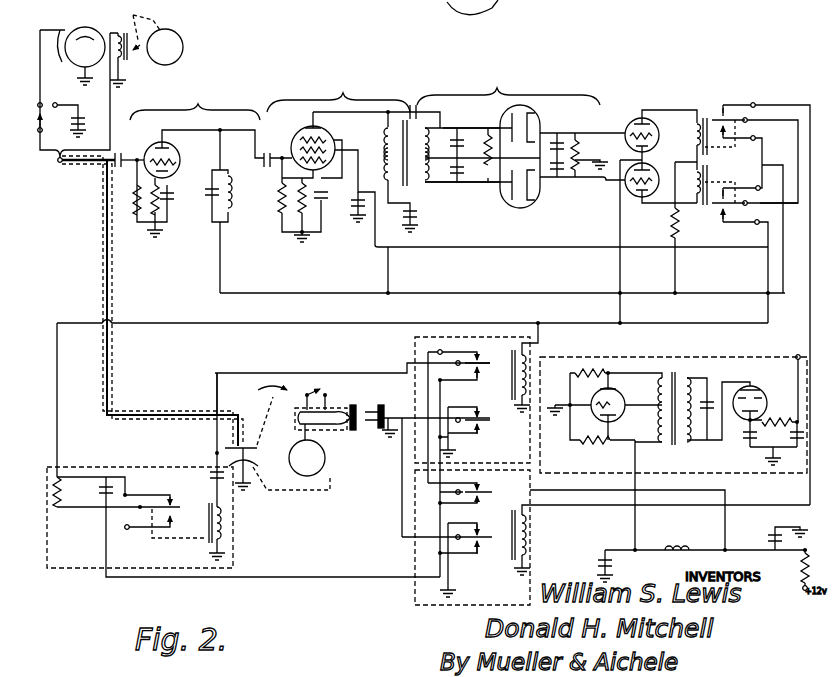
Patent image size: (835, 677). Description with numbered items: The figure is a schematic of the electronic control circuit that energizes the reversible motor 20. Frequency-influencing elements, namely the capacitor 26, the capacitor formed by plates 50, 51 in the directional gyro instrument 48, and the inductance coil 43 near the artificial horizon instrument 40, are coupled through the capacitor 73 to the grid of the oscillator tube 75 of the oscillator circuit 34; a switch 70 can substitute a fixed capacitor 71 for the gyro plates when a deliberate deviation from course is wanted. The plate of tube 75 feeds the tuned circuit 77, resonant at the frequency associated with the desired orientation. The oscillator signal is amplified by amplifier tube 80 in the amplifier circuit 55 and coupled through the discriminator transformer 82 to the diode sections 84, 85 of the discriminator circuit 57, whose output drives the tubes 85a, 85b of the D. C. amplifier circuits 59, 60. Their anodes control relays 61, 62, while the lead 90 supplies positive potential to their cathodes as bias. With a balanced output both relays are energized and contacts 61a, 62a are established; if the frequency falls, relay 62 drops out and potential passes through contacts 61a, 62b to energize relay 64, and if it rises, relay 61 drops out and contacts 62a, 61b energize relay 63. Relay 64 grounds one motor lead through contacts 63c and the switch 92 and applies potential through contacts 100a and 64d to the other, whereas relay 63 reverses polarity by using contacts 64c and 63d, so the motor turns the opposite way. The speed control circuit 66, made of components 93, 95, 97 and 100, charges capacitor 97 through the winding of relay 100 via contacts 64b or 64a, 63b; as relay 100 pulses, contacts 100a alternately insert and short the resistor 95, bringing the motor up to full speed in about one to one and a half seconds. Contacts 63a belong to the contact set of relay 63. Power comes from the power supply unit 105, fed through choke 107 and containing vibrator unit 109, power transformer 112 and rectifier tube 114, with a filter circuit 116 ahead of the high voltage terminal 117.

The reversible motor 20 is at (326, 458).
The capacitor 26 is at (225, 450).
The oscillator circuit 34 is at (195, 99).
The level or artificial horizon indicating instrument 40 is at (185, 43).
The inductance coil 43 is at (128, 63).
The directional gyro instrument 48 is at (96, 31).
The capacitor plate 50 is at (74, 38).
The capacitor plate 51 is at (58, 46).
The amplifier circuit 55 is at (338, 91).
The discriminator circuit 57 is at (508, 84).
The D. C. amplifier circuit 59 is at (626, 122).
The D. C. amplifier circuit 60 is at (622, 198).
The relay 61 is at (726, 100).
The relay contacts 61a is at (738, 137).
The relay contacts 61b is at (724, 108).
The relay 62 is at (697, 212).
The relay contacts 62a is at (723, 192).
The relay contacts 62b is at (723, 216).
The relay 63 is at (532, 535).
The relay contacts 63a is at (474, 485).
The relay contacts 63b is at (478, 500).
The relay contacts 63c is at (480, 542).
The relay contacts 63d is at (469, 560).
The relay 64 is at (410, 350).
The relay contacts 64a is at (470, 351).
The relay contacts 64b is at (478, 372).
The relay contacts 64c is at (481, 409).
The relay contacts 64d is at (478, 426).
The speed control circuit 66 is at (86, 570).
The switch 70 is at (38, 118).
The fixed capacitor 71 is at (82, 119).
The capacitor 73 is at (144, 184).
The oscillator tube 75 is at (176, 160).
The tuned circuit 77 is at (217, 222).
The amplifier tube 80 is at (328, 136).
The discriminator transformer 82 is at (408, 186).
The diode section 84 is at (541, 117).
The diode section 85 is at (540, 195).
The tube 85a is at (636, 122).
The tube 85b is at (642, 199).
The lead 90 is at (597, 294).
The switch 92 is at (327, 394).
The component of speed control circuit 93 is at (104, 500).
The resistor 95 is at (64, 490).
The capacitor 97 is at (213, 473).
The relay 100 is at (222, 525).
The relay contacts 100a is at (188, 485).
The power supply unit 105 is at (752, 475).
The choke 107 is at (683, 546).
The vibrator unit 109 is at (576, 441).
The power transformer 112 is at (664, 443).
The rectifier tube 114 is at (758, 391).
The filter circuit 116 is at (750, 448).
The terminal 117 is at (797, 355).